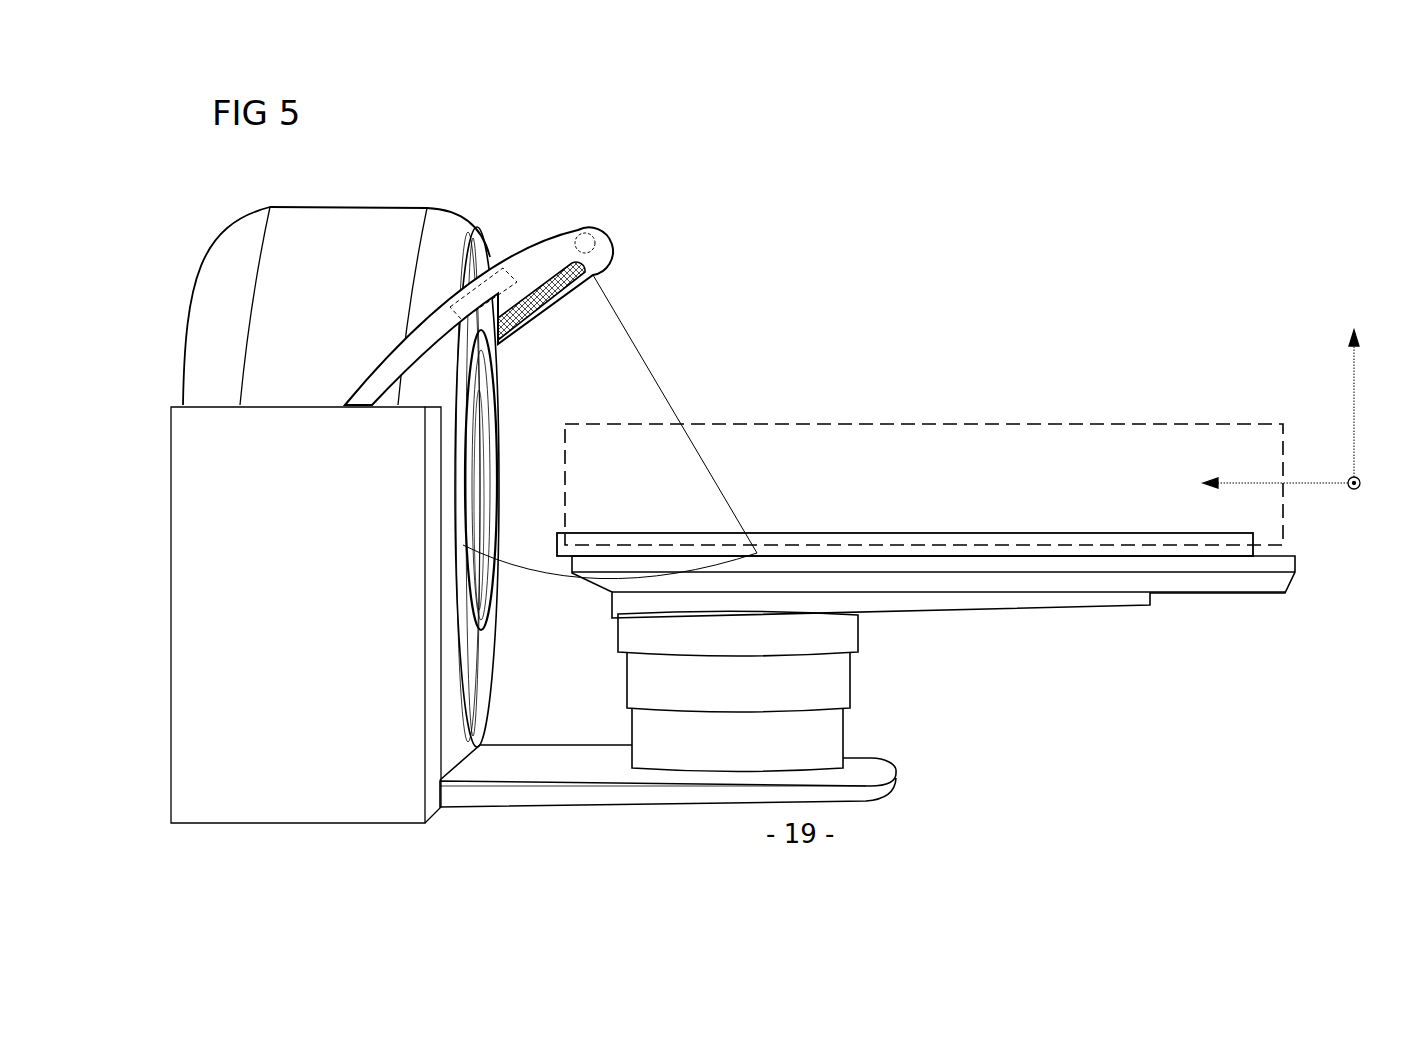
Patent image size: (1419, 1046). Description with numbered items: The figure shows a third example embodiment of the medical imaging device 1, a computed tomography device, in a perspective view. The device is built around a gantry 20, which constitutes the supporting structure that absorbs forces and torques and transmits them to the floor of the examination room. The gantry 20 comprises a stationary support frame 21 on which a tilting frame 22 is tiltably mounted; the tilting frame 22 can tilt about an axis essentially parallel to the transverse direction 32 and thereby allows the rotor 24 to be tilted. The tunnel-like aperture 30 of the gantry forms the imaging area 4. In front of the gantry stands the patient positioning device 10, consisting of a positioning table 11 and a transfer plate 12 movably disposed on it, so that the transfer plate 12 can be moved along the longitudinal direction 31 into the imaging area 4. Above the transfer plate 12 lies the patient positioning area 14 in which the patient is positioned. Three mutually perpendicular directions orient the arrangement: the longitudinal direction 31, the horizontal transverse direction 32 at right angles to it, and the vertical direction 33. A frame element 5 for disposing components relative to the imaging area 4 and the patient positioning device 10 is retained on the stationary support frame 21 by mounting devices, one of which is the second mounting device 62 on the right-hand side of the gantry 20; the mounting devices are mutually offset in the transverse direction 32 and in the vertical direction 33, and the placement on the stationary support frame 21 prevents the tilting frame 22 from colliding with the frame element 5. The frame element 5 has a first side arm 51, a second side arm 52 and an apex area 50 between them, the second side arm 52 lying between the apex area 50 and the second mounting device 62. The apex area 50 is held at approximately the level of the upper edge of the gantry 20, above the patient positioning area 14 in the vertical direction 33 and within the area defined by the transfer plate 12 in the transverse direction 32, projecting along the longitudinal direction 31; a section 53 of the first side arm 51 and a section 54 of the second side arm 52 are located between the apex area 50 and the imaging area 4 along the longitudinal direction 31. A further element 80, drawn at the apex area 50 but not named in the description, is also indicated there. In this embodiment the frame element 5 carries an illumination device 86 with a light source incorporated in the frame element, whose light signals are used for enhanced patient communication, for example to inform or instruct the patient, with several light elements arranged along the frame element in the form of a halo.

The medical imaging device 1 is at (761, 477).
The imaging area 4 is at (483, 470).
The frame element 5 is at (608, 193).
The patient positioning device 10 is at (926, 619).
The positioning table 11 is at (848, 685).
The transfer plate 12 is at (945, 536).
The patient positioning area 14 is at (1062, 435).
The gantry 20 is at (507, 478).
The stationary support frame 21 is at (180, 641).
The tilting frame 22 is at (445, 228).
The rotor 24 is at (336, 269).
The tunnel-like aperture 30 is at (558, 487).
The longitudinal direction 31 is at (1253, 483).
The transverse direction 32 is at (1357, 490).
The vertical direction 33 is at (1358, 393).
The apex area 50 is at (513, 269).
The first side arm 51 is at (581, 329).
The second side arm 52 is at (510, 269).
The section of the first side arm 53 is at (517, 324).
The section of the second side arm 54 is at (512, 268).
The second mounting device 62 is at (363, 398).
The camera 80 is at (590, 240).
The illumination device 86 is at (581, 329).